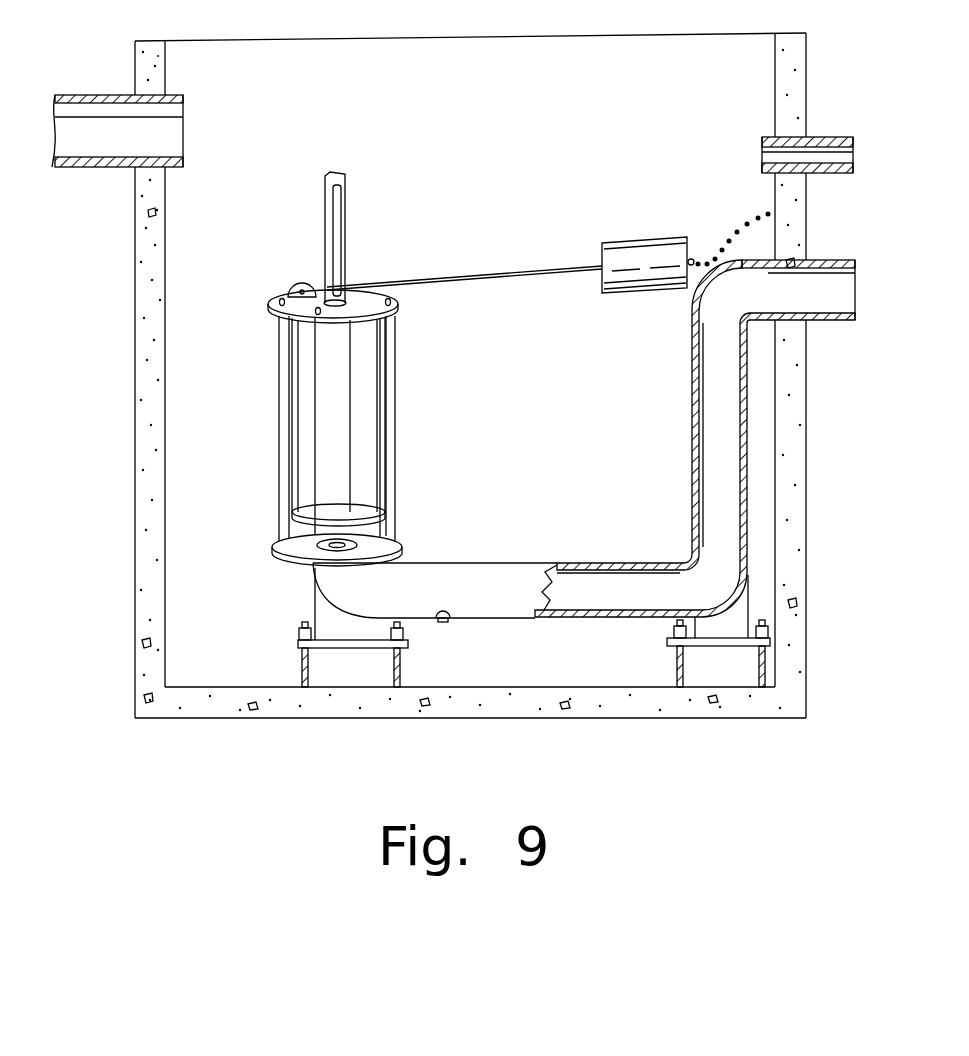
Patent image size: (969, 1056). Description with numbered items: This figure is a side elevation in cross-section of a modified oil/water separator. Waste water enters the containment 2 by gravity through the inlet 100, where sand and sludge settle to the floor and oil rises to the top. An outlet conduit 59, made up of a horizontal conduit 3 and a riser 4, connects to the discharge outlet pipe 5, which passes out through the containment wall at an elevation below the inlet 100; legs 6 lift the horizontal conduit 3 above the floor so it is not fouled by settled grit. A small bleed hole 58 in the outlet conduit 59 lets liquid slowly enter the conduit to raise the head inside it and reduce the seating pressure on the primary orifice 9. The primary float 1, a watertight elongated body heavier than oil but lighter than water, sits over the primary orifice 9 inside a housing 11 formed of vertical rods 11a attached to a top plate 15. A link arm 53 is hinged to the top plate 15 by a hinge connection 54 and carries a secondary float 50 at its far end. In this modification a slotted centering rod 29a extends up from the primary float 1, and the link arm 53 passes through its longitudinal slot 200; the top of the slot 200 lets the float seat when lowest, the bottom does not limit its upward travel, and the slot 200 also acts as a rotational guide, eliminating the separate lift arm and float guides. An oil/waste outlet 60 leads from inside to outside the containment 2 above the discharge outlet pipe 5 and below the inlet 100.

The primary float 1 is at (343, 460).
The containment 2 is at (137, 504).
The horizontal conduit 3 is at (513, 597).
The riser 4 is at (725, 505).
The discharge outlet pipe 5 is at (828, 316).
The legs 6 is at (392, 668).
The primary orifice 9 is at (378, 543).
The housing 11 is at (404, 360).
The vertical rods 11a is at (392, 405).
The top plate 15 is at (268, 313).
The slotted centering rod 29a is at (340, 176).
The secondary float 50 is at (636, 258).
The link arm 53 is at (507, 271).
The hinge connection 54 is at (300, 286).
The bleed hole 58 is at (443, 622).
The outlet conduit 59 is at (686, 506).
The oil/waste outlet 60 is at (812, 137).
The inlet 100 is at (112, 94).
The slot 200 is at (337, 220).